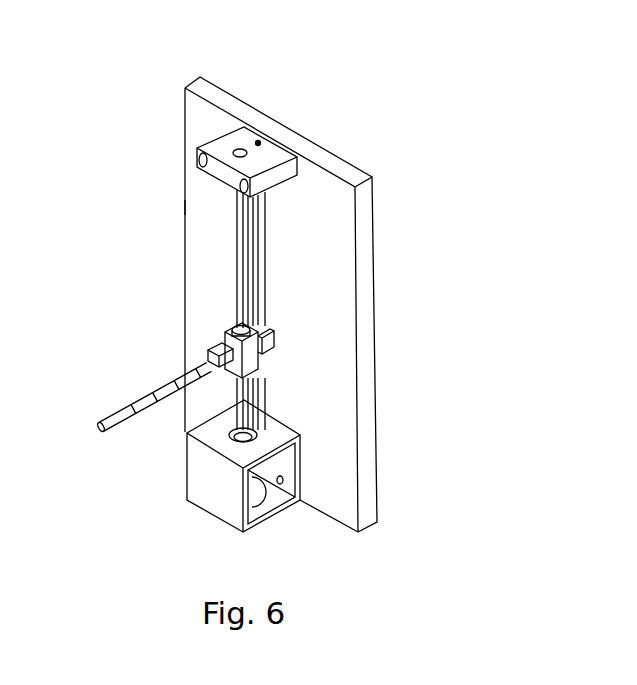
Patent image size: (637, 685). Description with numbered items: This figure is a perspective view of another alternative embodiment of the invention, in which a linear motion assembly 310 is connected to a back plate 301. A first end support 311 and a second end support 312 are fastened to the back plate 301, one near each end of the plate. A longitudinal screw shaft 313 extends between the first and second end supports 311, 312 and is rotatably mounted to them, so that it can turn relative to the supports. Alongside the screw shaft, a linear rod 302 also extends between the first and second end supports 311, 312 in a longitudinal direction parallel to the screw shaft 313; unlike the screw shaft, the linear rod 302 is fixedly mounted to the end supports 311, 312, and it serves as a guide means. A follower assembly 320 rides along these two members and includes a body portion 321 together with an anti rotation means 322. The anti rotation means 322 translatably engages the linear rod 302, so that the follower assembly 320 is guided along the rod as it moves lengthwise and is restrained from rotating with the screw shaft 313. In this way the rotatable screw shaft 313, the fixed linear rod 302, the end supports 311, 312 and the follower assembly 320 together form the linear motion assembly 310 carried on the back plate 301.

The back plate 301 is at (327, 142).
The linear motion assembly 310 is at (183, 203).
The first end support 311 is at (225, 126).
The second end support 312 is at (207, 455).
The longitudinal screw shaft 313 is at (233, 275).
The linear rod 302 is at (269, 266).
The follower assembly 320 is at (222, 331).
The body portion 321 is at (257, 357).
The anti rotation means 322 is at (279, 334).